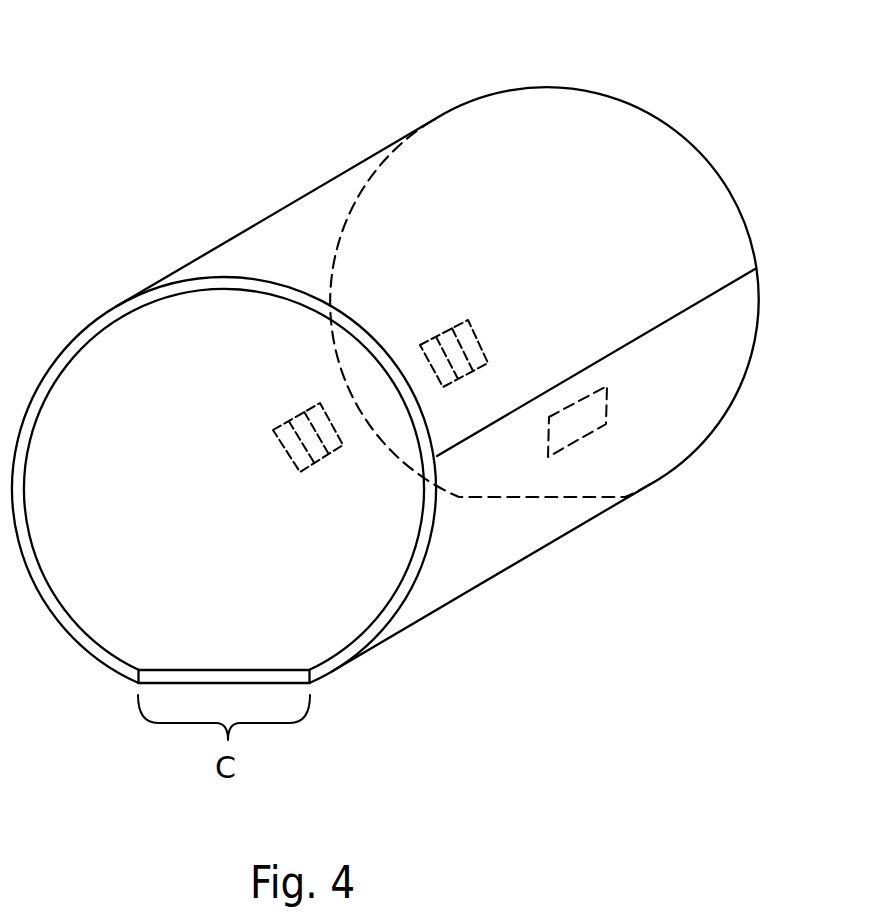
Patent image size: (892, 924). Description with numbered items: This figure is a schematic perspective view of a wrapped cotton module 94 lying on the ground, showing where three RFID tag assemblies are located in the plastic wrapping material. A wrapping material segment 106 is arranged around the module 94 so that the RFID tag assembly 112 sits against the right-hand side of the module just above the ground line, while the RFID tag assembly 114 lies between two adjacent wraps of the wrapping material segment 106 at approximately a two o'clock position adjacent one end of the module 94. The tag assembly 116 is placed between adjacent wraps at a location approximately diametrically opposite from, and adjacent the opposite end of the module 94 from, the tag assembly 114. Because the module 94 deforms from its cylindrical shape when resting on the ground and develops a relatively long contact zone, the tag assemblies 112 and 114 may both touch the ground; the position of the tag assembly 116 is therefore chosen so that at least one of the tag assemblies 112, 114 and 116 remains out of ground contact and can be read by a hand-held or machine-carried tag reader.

The wrapped cotton module 94 is at (172, 239).
The wrapping material segment 106 is at (304, 180).
The RFID tag assembly 114 is at (478, 331).
The RFID tag assembly 116 is at (280, 440).
The RFID tag assembly 112 is at (606, 418).